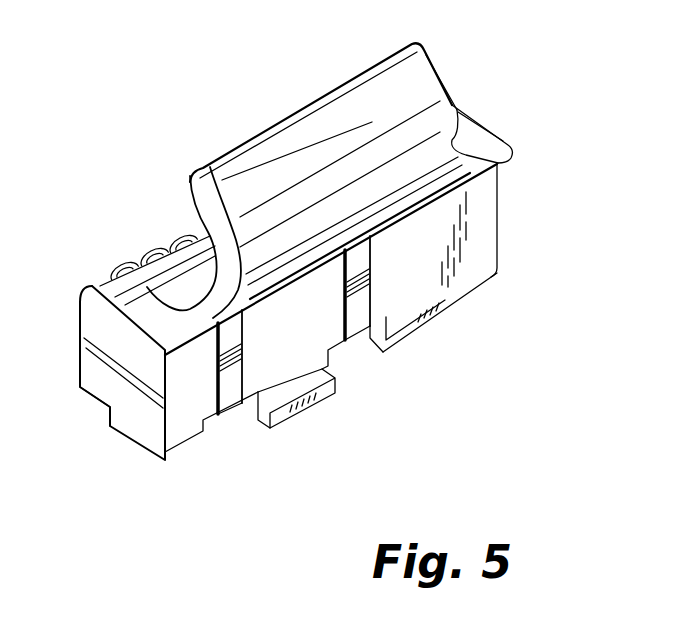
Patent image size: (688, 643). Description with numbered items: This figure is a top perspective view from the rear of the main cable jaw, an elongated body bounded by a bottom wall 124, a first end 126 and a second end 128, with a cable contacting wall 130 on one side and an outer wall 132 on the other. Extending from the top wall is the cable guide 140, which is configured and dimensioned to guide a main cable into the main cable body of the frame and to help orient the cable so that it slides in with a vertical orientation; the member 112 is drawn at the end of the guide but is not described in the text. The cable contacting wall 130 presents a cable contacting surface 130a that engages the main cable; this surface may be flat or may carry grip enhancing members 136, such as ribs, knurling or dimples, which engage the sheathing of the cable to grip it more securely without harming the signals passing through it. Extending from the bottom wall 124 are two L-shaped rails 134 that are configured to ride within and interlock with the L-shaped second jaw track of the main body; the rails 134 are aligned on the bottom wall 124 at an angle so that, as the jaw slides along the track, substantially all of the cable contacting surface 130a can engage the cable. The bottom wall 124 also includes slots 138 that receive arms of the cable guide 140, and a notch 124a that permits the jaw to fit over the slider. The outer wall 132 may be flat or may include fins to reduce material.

The wing / tab at end of hood 112 is at (460, 130).
The bottom wall 124 is at (166, 462).
The notch 124a is at (95, 397).
The first end 126 is at (100, 330).
The second end 128 is at (502, 204).
The cable contacting wall 130 is at (480, 262).
The cable contacting surface 130a is at (420, 277).
The outer wall 132 is at (112, 262).
The rails 134 is at (403, 333).
The grip enhancing members 136 is at (343, 328).
The slots 138 is at (355, 348).
The cable guide 140 is at (294, 112).